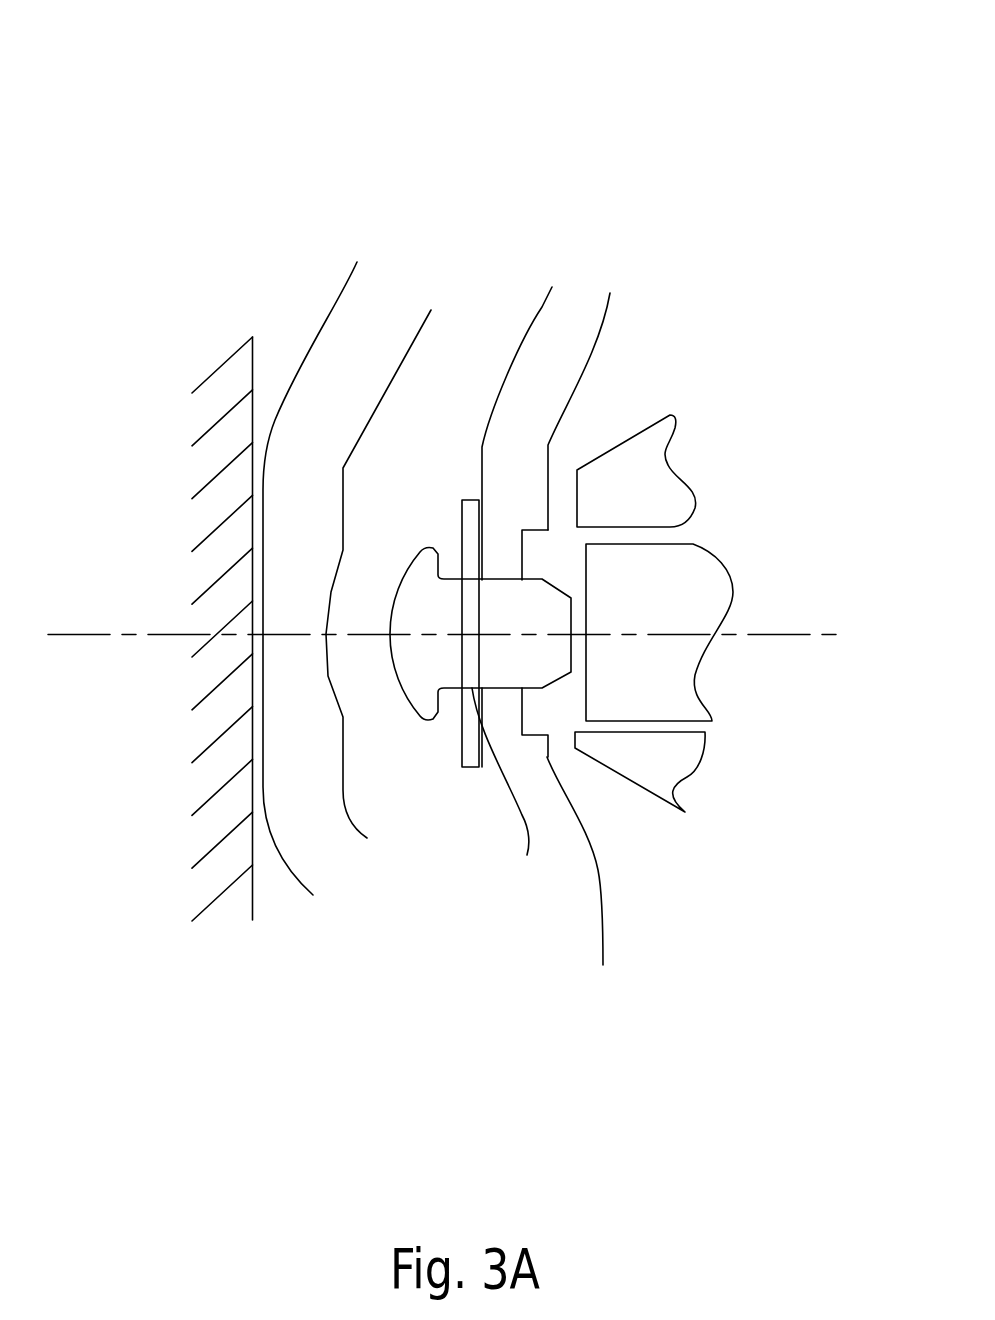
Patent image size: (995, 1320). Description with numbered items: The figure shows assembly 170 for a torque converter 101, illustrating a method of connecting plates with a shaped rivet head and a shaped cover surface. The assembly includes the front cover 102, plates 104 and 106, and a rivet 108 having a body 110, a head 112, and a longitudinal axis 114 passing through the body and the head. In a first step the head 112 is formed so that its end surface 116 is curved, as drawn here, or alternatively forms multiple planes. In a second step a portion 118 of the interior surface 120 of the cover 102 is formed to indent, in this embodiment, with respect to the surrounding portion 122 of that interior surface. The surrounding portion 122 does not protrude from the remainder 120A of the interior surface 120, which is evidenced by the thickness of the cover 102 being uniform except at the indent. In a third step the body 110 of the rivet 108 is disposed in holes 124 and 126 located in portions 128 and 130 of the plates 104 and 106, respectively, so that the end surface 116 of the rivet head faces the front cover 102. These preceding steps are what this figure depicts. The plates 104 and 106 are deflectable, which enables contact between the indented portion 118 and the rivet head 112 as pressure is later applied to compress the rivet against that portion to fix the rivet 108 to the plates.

The assembly 170 is at (237, 101).
The torque converter 101 is at (718, 151).
The front cover 102 is at (335, 291).
The plate 104 is at (471, 784).
The plate 106 is at (514, 868).
The rivet 108 is at (592, 655).
The body 110 is at (517, 653).
The head 112 is at (415, 682).
The longitudinal axis 114 is at (121, 634).
The end surface 116 is at (393, 605).
The portion 118 is at (327, 672).
The interior surface 120 is at (411, 373).
The remainder 120A is at (373, 420).
The surrounding portion 122 is at (343, 520).
The hole 124 is at (498, 688).
The hole 126 is at (585, 878).
The portion 128 is at (363, 437).
The portion 130 is at (500, 537).